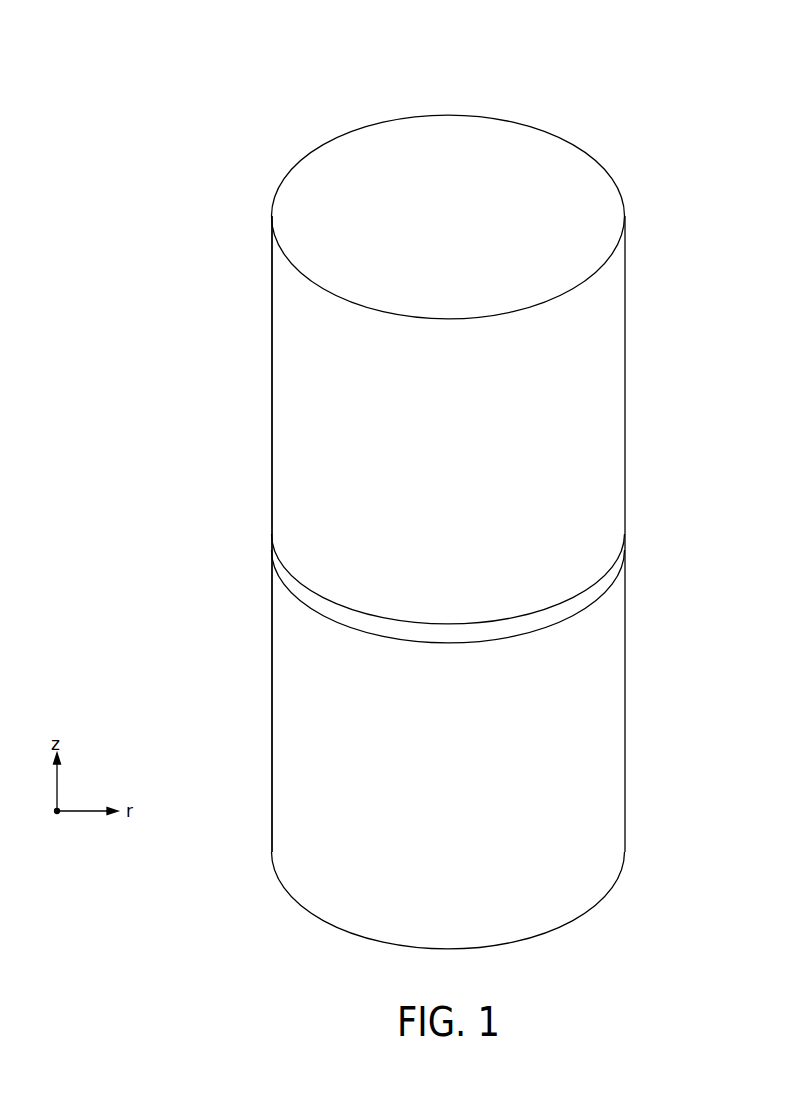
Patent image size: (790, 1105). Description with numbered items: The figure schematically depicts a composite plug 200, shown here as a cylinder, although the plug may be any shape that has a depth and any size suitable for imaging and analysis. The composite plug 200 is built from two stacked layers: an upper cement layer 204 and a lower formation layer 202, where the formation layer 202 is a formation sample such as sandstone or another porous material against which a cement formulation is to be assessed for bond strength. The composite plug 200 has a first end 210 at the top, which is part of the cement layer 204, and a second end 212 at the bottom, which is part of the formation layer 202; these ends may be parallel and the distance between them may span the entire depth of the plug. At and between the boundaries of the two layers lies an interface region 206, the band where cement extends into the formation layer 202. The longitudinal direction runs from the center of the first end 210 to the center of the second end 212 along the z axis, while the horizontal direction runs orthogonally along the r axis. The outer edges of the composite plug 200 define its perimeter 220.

The composite plug 200 is at (442, 501).
The formation layer 202 is at (606, 745).
The cement layer 204 is at (606, 392).
The interface region 206 is at (607, 578).
The first end 210 is at (493, 131).
The second end 212 is at (556, 924).
The perimeter 220 is at (242, 534).